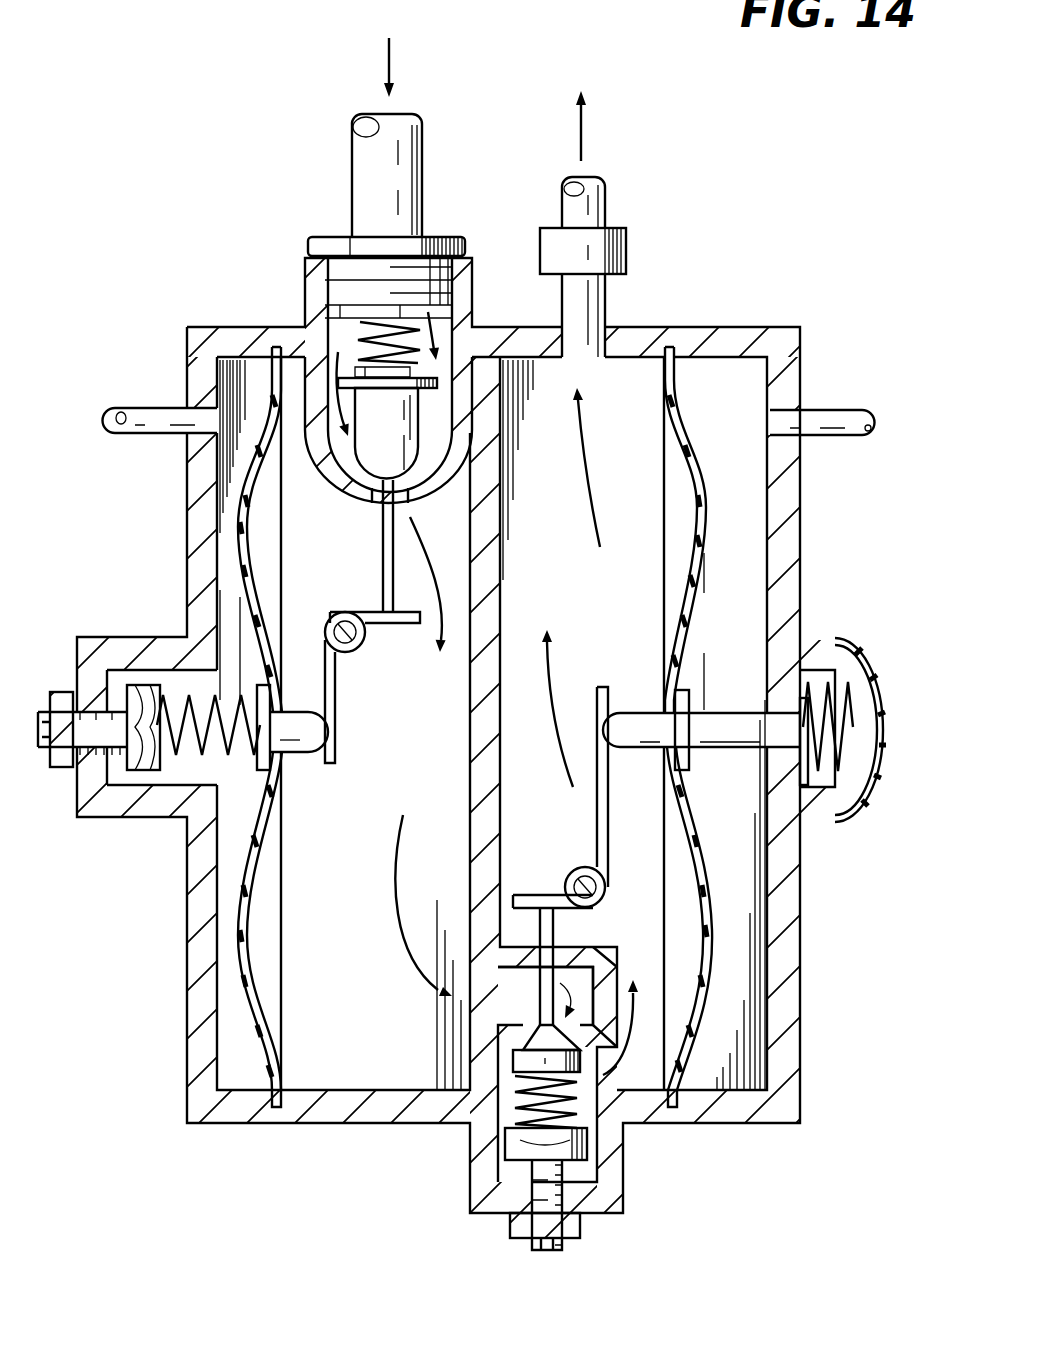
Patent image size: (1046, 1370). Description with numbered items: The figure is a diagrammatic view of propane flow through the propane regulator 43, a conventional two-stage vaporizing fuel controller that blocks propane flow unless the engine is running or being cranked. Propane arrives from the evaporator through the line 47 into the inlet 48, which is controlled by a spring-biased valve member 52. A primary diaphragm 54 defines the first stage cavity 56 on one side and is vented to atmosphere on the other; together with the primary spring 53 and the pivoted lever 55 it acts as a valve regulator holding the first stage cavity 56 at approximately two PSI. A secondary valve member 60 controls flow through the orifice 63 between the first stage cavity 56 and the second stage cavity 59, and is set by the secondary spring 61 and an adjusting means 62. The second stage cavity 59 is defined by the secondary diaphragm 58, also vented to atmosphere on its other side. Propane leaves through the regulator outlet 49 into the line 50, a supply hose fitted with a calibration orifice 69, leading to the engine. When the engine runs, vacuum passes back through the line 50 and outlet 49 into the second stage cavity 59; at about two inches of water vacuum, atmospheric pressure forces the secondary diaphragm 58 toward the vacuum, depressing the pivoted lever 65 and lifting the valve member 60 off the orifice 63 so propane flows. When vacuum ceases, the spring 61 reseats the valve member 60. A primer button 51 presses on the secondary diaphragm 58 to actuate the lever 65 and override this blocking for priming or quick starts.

The propane regulator 43 is at (257, 295).
The line 47 is at (402, 179).
The inlet 48 is at (330, 238).
The regulator outlet 49 is at (587, 300).
The line 50 is at (597, 198).
The primer button 51 is at (855, 700).
The spring-biased valve member 52 is at (377, 457).
The primary spring 53 is at (173, 705).
The primary diaphragm 54 is at (240, 528).
The pivoted lever 55 is at (337, 668).
The first stage cavity 56 is at (433, 788).
The secondary diaphragm 58 is at (690, 597).
The second stage cavity 59 is at (633, 625).
The secondary valve member 60 is at (520, 1060).
The secondary spring 61 is at (520, 1112).
The adjusting means 62 is at (527, 1177).
The orifice 63 is at (530, 1025).
The pivoted lever 65 is at (597, 823).
The calibration orifice 69 is at (613, 253).